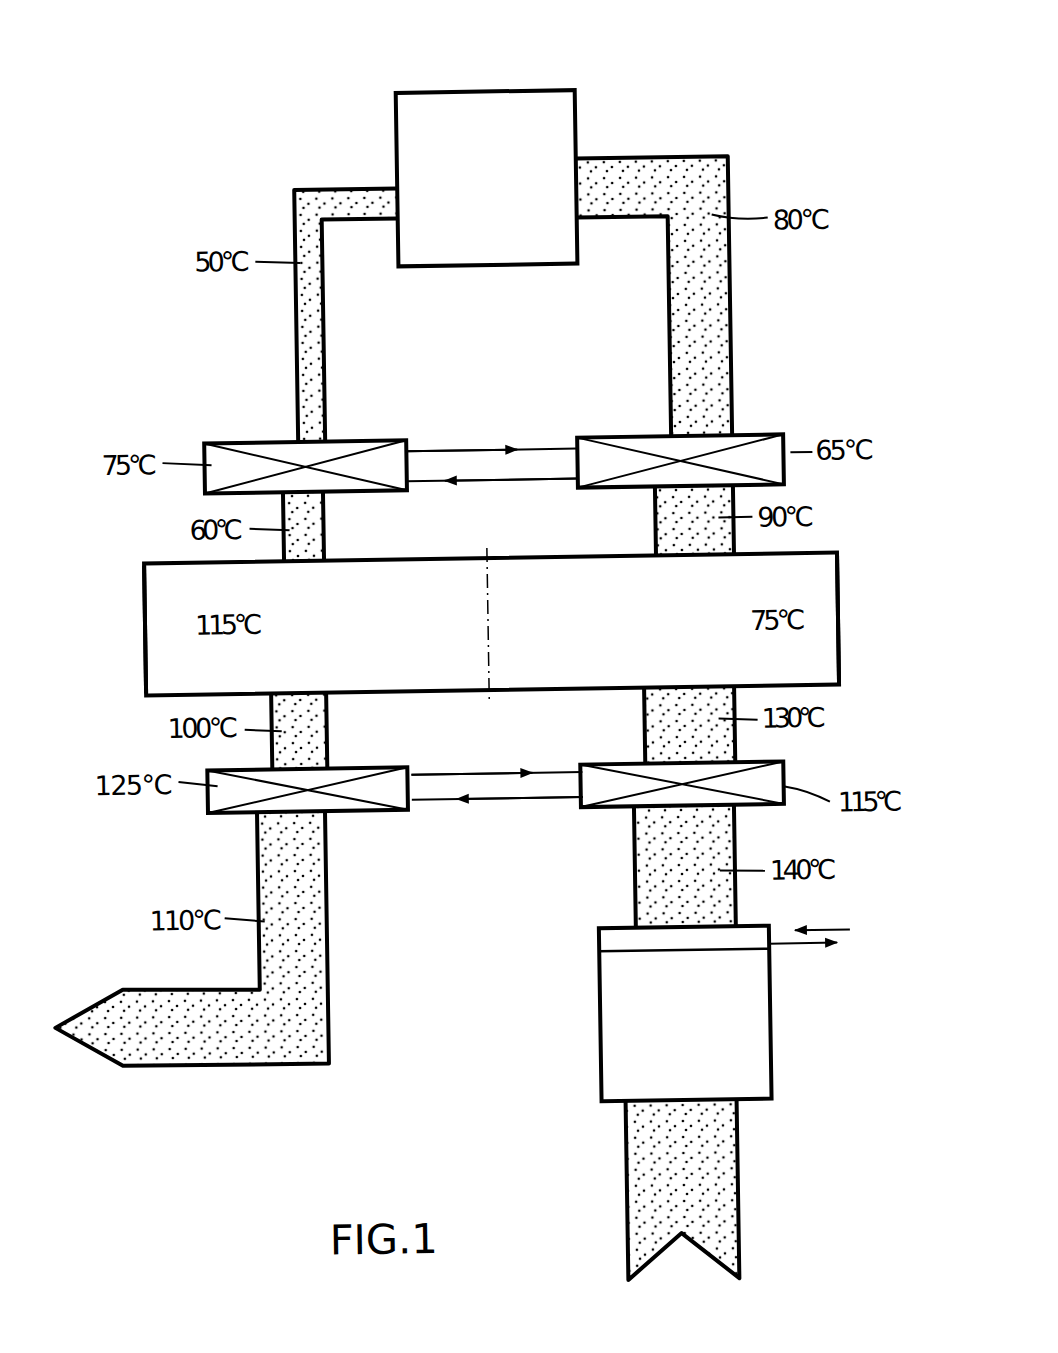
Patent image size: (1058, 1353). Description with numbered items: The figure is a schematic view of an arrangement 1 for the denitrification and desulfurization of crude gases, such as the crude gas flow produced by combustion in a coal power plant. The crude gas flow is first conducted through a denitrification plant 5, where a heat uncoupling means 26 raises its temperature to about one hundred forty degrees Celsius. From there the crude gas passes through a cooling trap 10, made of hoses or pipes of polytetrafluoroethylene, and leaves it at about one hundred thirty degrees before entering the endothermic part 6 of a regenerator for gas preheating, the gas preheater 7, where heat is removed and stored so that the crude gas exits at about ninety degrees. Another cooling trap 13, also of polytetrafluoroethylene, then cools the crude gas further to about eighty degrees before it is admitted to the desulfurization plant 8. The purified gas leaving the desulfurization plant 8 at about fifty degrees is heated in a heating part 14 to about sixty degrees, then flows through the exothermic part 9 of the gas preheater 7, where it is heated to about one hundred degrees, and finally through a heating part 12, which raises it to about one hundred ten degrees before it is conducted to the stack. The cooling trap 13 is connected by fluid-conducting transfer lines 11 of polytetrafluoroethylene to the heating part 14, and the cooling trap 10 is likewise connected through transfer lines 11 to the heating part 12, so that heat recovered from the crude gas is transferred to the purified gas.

The arrangement 1 is at (684, 131).
The denitrification plant 5 is at (689, 1031).
The endothermic part 6 is at (840, 646).
The gas preheater 7 is at (530, 629).
The desulfurization plant 8 is at (478, 181).
The exothermic part 9 is at (157, 620).
The cooling trap 10 is at (790, 775).
The transfer lines 11 is at (491, 480).
The heating part 12 is at (214, 812).
The cooling trap 13 is at (760, 438).
The heating part 14 is at (371, 437).
The heat uncoupling means 26 is at (605, 942).